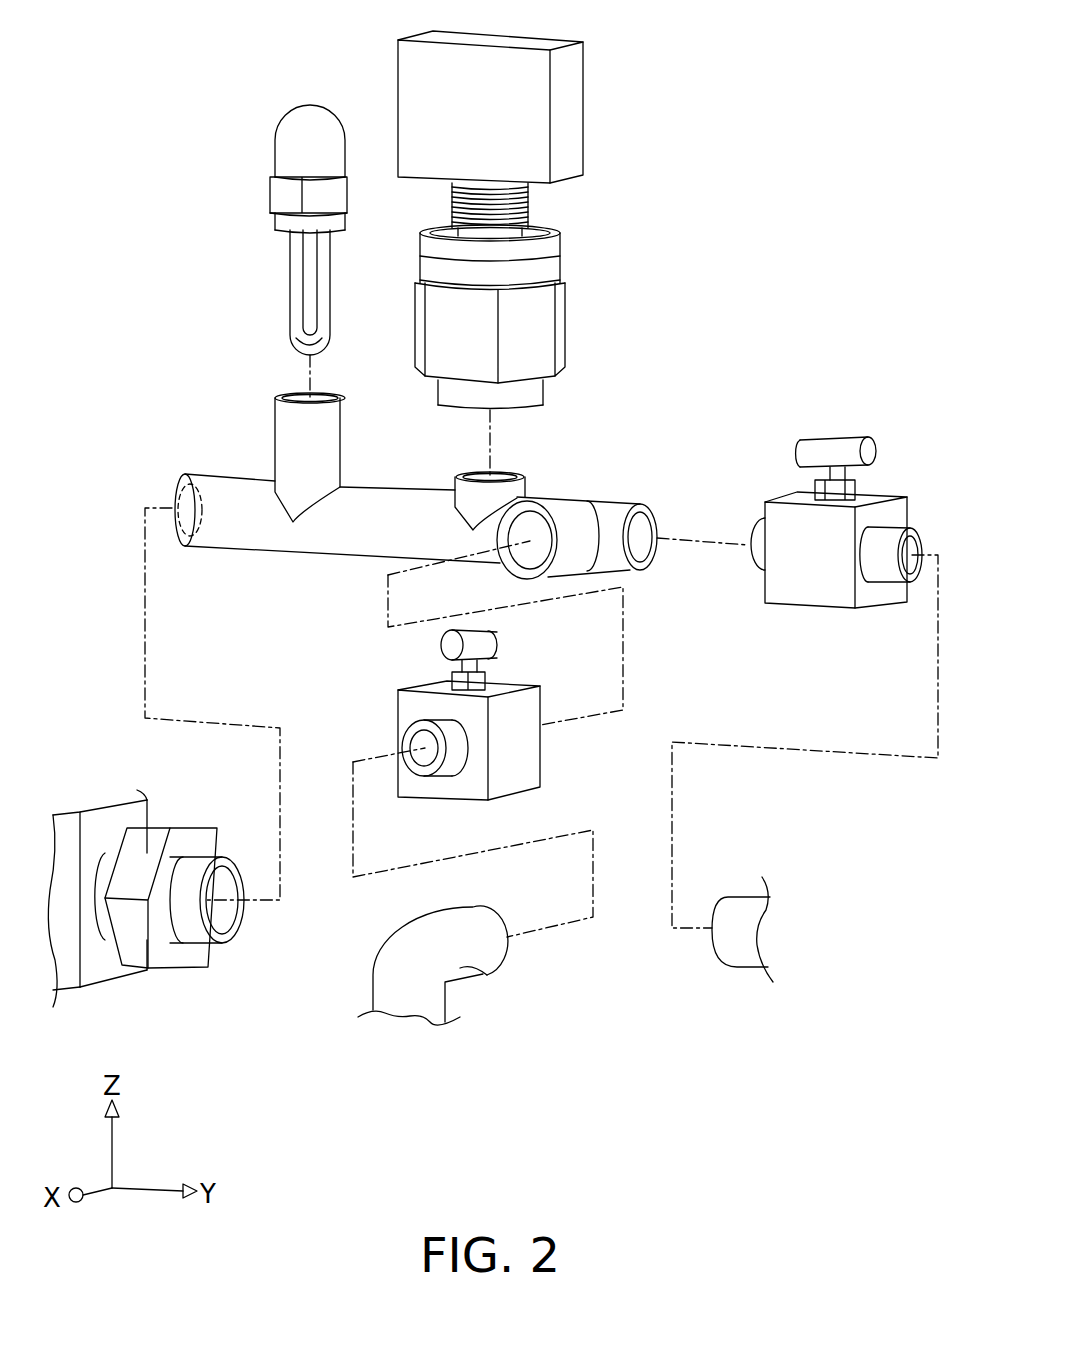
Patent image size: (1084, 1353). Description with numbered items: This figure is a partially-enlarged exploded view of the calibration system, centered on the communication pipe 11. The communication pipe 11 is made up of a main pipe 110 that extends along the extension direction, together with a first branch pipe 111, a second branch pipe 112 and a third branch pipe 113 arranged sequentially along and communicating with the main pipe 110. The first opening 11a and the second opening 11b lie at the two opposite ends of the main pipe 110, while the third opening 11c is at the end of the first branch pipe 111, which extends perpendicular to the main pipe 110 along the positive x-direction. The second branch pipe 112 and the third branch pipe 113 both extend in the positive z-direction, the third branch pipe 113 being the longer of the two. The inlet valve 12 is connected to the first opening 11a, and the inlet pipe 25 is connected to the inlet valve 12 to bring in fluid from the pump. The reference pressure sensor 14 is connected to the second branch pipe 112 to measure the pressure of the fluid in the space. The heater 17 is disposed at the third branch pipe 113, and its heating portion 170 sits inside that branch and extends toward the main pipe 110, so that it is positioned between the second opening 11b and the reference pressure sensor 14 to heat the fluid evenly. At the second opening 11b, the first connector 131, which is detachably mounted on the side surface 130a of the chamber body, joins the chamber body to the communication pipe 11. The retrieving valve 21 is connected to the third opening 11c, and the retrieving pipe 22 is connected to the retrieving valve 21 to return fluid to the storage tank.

The communication pipe 11 is at (426, 500).
The first opening 11a is at (668, 550).
The second opening 11b is at (170, 492).
The third opening 11c is at (500, 558).
The inlet valve 12 is at (893, 513).
The reference pressure sensor 14 is at (580, 63).
The heater 17 is at (275, 197).
The retrieving valve 21 is at (508, 782).
The retrieving pipe 22 is at (462, 967).
The inlet pipe 25 is at (750, 957).
The main pipe 110 is at (310, 524).
The first branch pipe 111 is at (560, 508).
The second branch pipe 112 is at (460, 487).
The third branch pipe 113 is at (275, 432).
The first connector 131 is at (183, 960).
The side surface 130a is at (98, 977).
The heating portion 170 is at (298, 277).